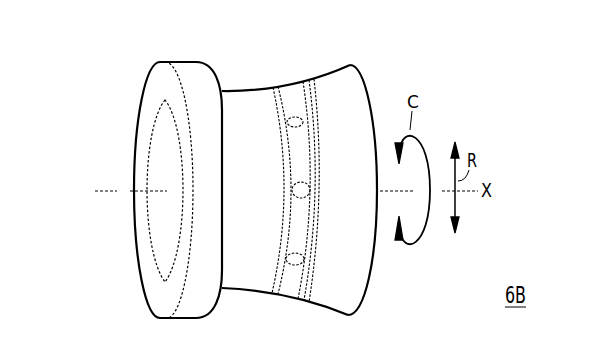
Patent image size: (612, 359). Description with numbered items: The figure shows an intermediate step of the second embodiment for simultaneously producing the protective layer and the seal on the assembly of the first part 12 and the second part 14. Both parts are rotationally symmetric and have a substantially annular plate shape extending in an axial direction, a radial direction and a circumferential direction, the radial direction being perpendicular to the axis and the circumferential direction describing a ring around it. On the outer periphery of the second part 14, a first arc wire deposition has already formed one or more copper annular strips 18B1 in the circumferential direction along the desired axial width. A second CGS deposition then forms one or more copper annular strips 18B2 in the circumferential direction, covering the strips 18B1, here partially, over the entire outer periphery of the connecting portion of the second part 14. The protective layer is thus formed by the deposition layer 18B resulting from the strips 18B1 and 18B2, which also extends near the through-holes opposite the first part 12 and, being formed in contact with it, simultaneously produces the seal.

The first part 12 is at (237, 288).
The second part 14 is at (318, 298).
The deposition layer 18B is at (277, 164).
The annular strip 18B1 is at (310, 82).
The annular strip 18B2 is at (280, 90).